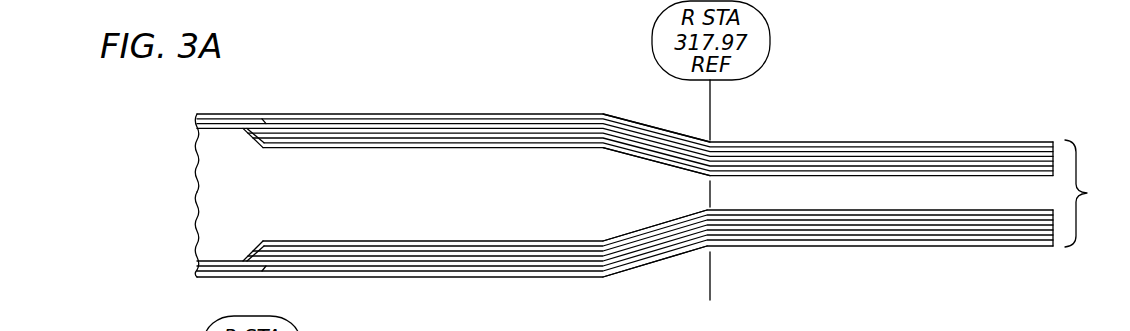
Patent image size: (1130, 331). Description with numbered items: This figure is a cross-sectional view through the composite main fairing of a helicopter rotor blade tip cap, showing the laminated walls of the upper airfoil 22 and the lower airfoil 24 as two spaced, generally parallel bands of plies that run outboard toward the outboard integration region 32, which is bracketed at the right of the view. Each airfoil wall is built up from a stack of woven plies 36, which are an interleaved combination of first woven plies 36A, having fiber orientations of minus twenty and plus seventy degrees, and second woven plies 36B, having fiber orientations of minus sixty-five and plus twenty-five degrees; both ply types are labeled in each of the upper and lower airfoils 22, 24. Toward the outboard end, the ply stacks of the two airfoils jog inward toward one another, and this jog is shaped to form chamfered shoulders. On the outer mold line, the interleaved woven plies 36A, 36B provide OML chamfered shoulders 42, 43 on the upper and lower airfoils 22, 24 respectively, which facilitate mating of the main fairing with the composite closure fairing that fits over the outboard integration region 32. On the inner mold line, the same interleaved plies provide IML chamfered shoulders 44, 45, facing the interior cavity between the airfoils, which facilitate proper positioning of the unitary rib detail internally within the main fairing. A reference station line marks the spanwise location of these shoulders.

The upper airfoil 22 is at (196, 122).
The lower airfoil 24 is at (196, 268).
The outboard integration region 32 is at (1087, 193).
The woven plies 36 is at (625, 197).
The first woven plies 36A is at (928, 141).
The second woven plies 36B is at (822, 160).
The OML chamfered shoulder 42 is at (643, 114).
The OML chamfered shoulder 43 is at (654, 273).
The IML chamfered shoulder 44 is at (637, 172).
The IML chamfered shoulder 45 is at (636, 221).